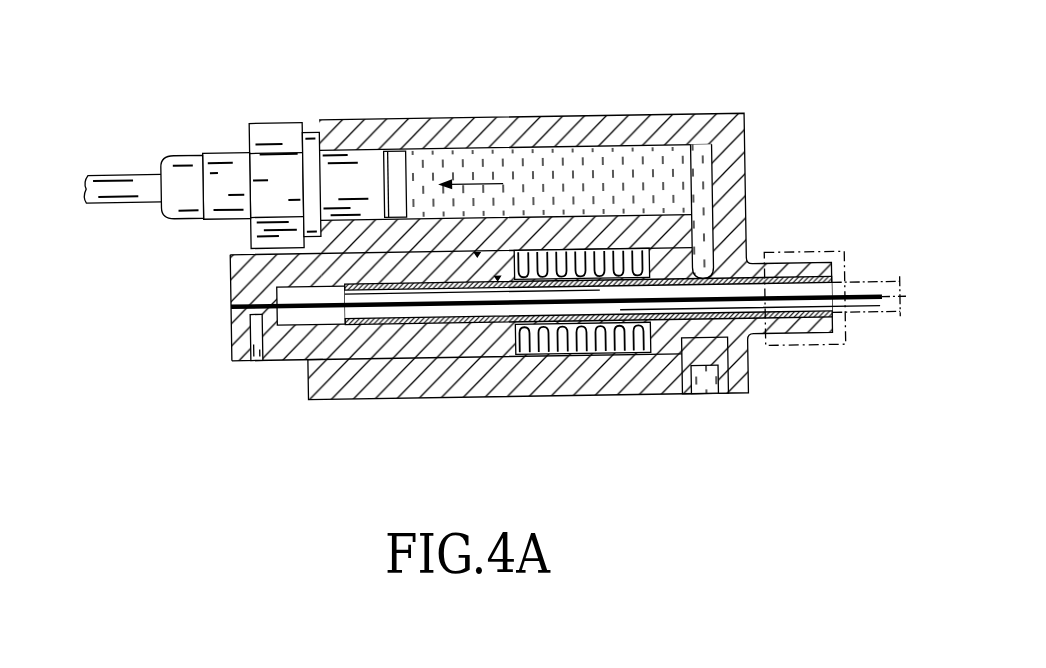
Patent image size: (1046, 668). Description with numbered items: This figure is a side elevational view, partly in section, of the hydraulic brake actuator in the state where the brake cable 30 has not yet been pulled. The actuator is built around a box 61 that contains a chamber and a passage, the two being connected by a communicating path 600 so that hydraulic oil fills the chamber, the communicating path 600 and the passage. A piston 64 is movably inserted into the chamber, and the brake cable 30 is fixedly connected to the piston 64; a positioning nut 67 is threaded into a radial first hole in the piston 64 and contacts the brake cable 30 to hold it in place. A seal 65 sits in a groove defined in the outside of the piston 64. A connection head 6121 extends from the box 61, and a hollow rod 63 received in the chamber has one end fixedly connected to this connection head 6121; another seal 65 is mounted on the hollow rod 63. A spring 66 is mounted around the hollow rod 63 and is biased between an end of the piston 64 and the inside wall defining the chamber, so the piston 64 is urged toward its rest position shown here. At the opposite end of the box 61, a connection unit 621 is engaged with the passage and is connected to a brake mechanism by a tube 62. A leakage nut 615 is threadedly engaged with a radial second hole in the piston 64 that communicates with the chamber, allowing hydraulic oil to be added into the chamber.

The box 61 is at (517, 128).
The communicating path 600 is at (696, 212).
The connection head 6121 is at (797, 257).
The tube 62 is at (120, 181).
The connection unit 621 is at (223, 158).
The positioning nut 67 is at (255, 318).
The piston 64 is at (287, 344).
The seal 65 is at (478, 353).
The spring 66 is at (565, 354).
The hollow rod 63 is at (667, 327).
The leakage nut 615 is at (713, 376).
The brake cable 30 is at (858, 315).